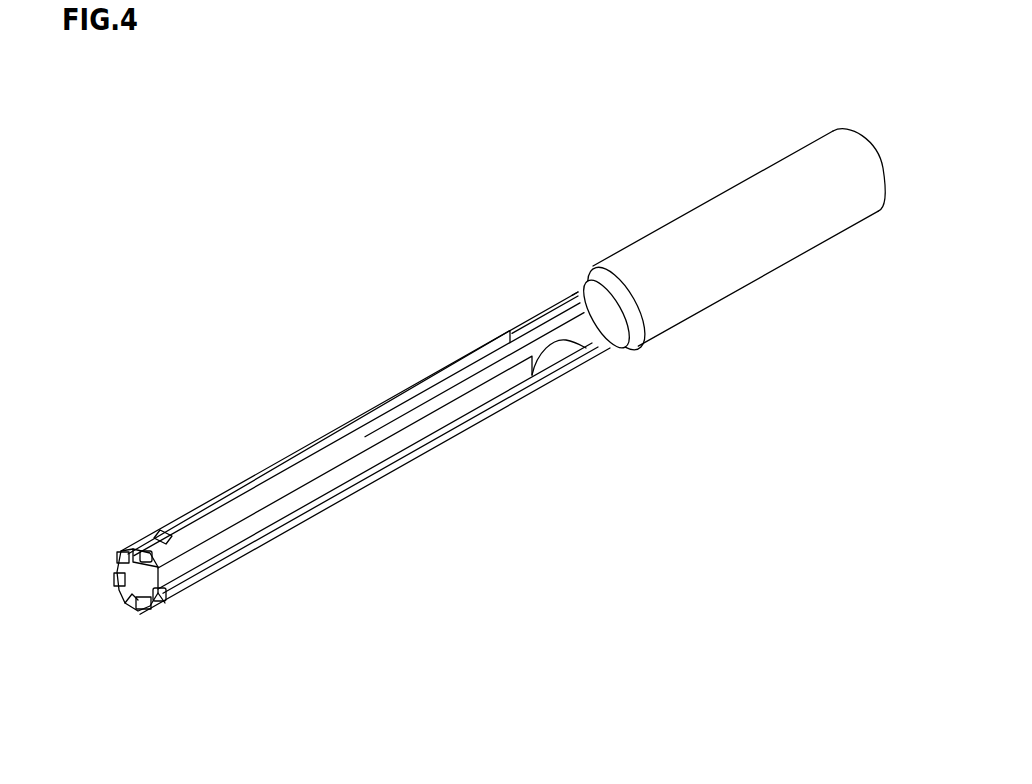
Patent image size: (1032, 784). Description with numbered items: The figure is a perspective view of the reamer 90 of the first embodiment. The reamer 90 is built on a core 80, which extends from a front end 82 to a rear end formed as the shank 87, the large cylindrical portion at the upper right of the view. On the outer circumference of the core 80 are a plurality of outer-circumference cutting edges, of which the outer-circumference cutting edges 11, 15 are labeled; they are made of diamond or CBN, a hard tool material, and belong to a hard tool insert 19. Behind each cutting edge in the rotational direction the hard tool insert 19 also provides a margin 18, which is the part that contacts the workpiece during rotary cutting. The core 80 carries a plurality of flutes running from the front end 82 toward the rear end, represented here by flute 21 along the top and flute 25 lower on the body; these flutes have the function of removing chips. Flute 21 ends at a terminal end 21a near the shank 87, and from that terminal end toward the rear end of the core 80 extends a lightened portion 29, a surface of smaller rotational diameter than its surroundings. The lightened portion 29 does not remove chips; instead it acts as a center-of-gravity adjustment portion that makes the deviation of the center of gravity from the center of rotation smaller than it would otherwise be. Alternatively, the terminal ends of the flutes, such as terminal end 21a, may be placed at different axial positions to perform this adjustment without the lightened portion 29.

The reamer 90 is at (849, 104).
The shank 87 is at (773, 275).
The core 80 is at (606, 343).
The flute 21 is at (307, 450).
The terminal end of flute 21a is at (578, 289).
The lightened portion 29 is at (567, 298).
The flute 25 is at (342, 481).
The outer-circumference cutting edge 11 is at (150, 550).
The hard tool insert 19 is at (167, 530).
The margin 18 is at (152, 545).
The outer-circumference cutting edge 15 is at (172, 603).
The front end 82 is at (132, 594).